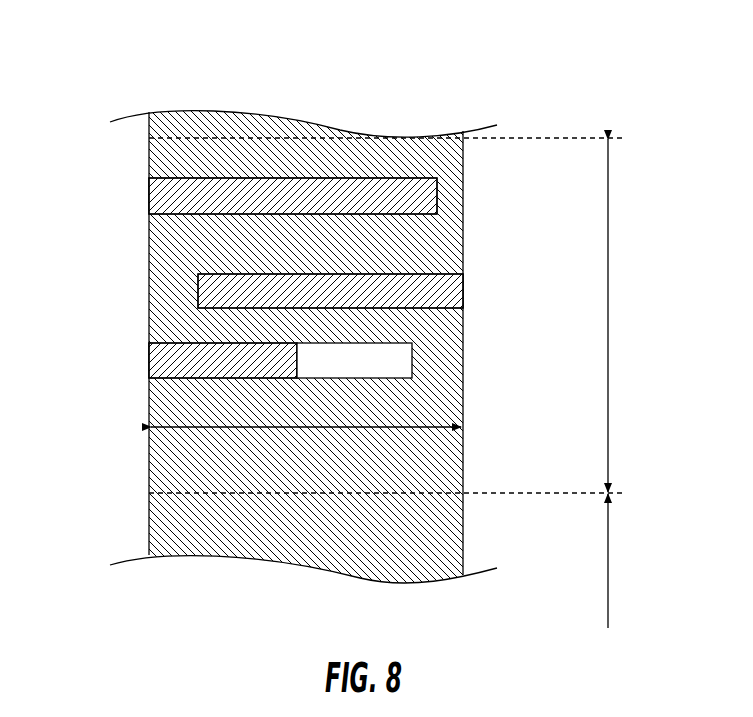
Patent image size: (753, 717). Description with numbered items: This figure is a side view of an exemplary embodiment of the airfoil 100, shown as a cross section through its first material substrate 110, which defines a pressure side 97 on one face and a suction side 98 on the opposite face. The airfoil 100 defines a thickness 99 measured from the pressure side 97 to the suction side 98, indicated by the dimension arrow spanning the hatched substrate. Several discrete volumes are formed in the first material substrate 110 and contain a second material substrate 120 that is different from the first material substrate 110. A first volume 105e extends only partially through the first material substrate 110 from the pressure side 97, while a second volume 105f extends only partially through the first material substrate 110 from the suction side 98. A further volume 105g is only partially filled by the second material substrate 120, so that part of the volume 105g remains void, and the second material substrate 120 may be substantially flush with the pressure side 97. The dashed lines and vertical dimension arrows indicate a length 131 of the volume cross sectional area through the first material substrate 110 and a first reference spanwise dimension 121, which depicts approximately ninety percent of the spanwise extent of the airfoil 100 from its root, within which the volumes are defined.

The airfoil 100 is at (415, 120).
The first volume 105e is at (149, 195).
The second volume 105f is at (463, 290).
The volume partially filled with second material substrate 105g is at (400, 365).
The first material substrate 110 is at (162, 257).
The second material substrate 120 is at (149, 363).
The pressure side 97 is at (147, 518).
The suction side 98 is at (466, 525).
The thickness 99 is at (435, 430).
The length 131 is at (608, 265).
The first reference spanwise dimension 121 is at (608, 588).